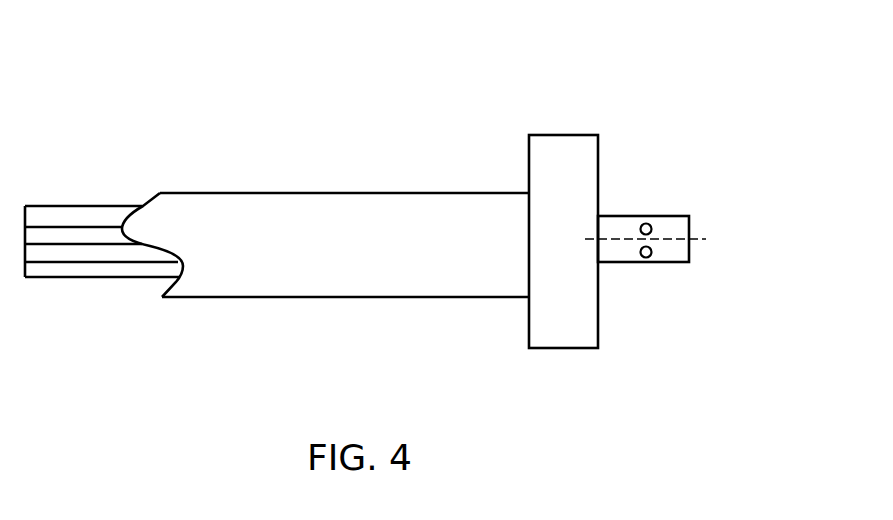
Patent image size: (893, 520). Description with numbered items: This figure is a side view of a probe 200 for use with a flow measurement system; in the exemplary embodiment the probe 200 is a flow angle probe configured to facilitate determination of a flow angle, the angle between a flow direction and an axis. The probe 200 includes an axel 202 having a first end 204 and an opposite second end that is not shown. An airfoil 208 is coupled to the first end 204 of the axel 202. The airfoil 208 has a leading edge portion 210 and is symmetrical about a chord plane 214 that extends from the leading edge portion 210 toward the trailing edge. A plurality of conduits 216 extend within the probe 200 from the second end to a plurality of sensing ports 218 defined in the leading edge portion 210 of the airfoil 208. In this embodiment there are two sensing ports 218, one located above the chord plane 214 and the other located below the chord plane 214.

The probe 200 is at (207, 89).
The axel 202 is at (390, 298).
The first end 204 is at (565, 135).
The airfoil 208 is at (683, 250).
The leading edge portion 210 is at (627, 263).
The chord plane 214 is at (700, 236).
The conduits 216 is at (90, 277).
The sensing ports 218 is at (653, 243).